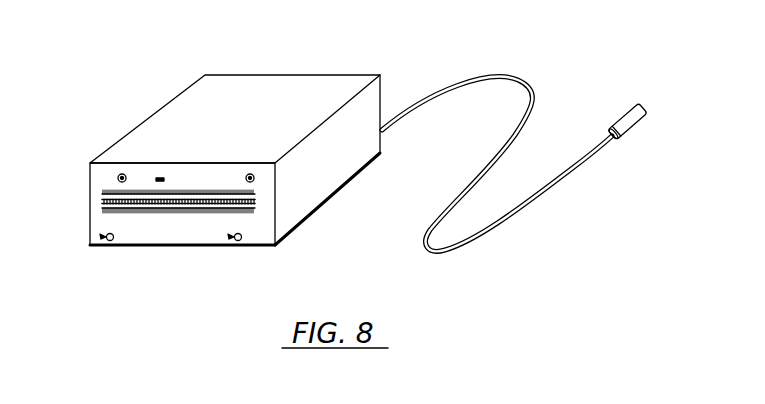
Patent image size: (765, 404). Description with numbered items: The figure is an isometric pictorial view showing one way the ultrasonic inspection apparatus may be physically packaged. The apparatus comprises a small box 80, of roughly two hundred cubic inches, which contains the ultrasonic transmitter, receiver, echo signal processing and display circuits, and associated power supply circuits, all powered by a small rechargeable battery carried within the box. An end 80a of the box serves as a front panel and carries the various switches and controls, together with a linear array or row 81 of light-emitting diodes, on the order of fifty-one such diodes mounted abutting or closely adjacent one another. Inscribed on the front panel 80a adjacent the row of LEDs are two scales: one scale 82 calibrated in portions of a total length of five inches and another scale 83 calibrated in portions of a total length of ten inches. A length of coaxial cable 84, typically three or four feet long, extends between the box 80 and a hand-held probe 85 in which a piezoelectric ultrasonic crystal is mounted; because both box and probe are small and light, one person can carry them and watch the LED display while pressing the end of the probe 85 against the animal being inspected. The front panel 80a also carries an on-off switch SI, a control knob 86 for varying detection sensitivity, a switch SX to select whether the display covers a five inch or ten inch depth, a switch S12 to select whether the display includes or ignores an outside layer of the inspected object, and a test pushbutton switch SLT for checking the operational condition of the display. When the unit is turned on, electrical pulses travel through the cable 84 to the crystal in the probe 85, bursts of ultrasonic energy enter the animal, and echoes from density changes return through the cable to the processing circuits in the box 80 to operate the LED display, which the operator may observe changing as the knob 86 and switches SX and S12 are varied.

The box 80 is at (192, 170).
The end of box 80a is at (97, 178).
The row of light-emitting diodes 81 is at (137, 198).
The scale 82 is at (210, 208).
The scale 83 is at (224, 190).
The coaxial cable 84 is at (506, 132).
The hand-held probe 85 is at (636, 120).
The control knob 86 is at (120, 166).
The on-off switch SI is at (160, 172).
The test pushbutton switch SLT is at (251, 172).
The switch SX is at (108, 243).
The switch S12 is at (238, 242).